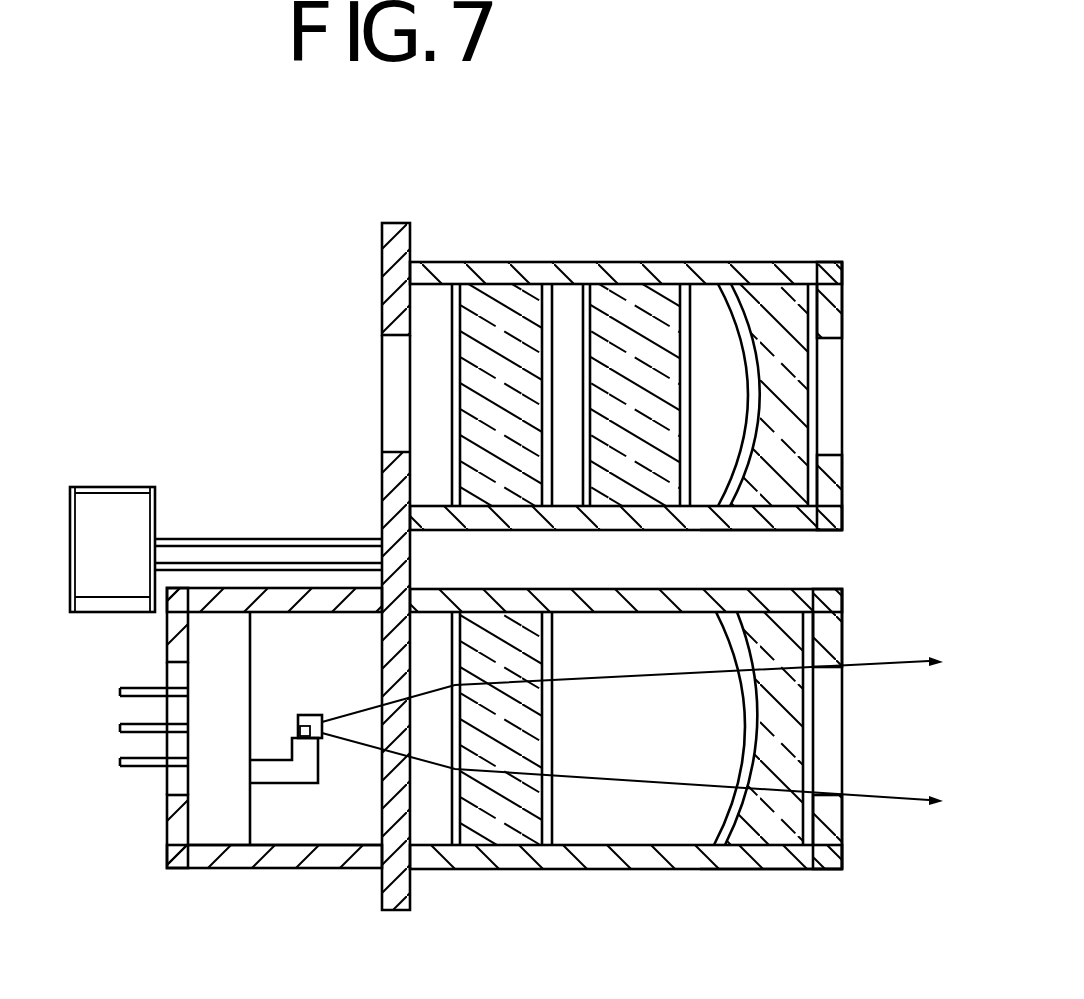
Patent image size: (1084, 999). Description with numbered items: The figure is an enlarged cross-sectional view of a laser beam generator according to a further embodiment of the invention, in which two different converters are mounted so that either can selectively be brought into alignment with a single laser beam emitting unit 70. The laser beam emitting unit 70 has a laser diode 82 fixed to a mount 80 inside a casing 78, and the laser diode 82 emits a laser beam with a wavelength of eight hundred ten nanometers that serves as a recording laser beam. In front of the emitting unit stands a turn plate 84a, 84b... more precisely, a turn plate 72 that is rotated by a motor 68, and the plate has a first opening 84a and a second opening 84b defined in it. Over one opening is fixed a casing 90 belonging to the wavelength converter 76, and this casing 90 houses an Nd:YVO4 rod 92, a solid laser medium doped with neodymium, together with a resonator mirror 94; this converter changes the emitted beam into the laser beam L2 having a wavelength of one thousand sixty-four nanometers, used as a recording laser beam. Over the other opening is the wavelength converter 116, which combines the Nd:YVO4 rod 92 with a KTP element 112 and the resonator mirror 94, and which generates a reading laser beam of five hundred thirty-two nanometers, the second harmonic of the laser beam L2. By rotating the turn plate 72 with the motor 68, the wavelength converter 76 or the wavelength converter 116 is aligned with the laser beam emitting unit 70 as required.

The motor 68 is at (117, 513).
The laser beam emitting unit 70 is at (195, 875).
The turn plate 72 is at (388, 262).
The wavelength converter 76 is at (642, 875).
The casing 78 is at (266, 870).
The mount 80 is at (212, 808).
The laser diode 82 is at (305, 713).
The first opening 84a is at (393, 772).
The second opening 84b is at (395, 408).
The casing 90 is at (783, 518).
The Nd:YVO4 rod 92 is at (497, 300).
The resonator mirror 94 is at (797, 424).
The KTP element 112 is at (636, 310).
The wavelength converter 116 is at (768, 263).
The laser beam L2 is at (866, 662).